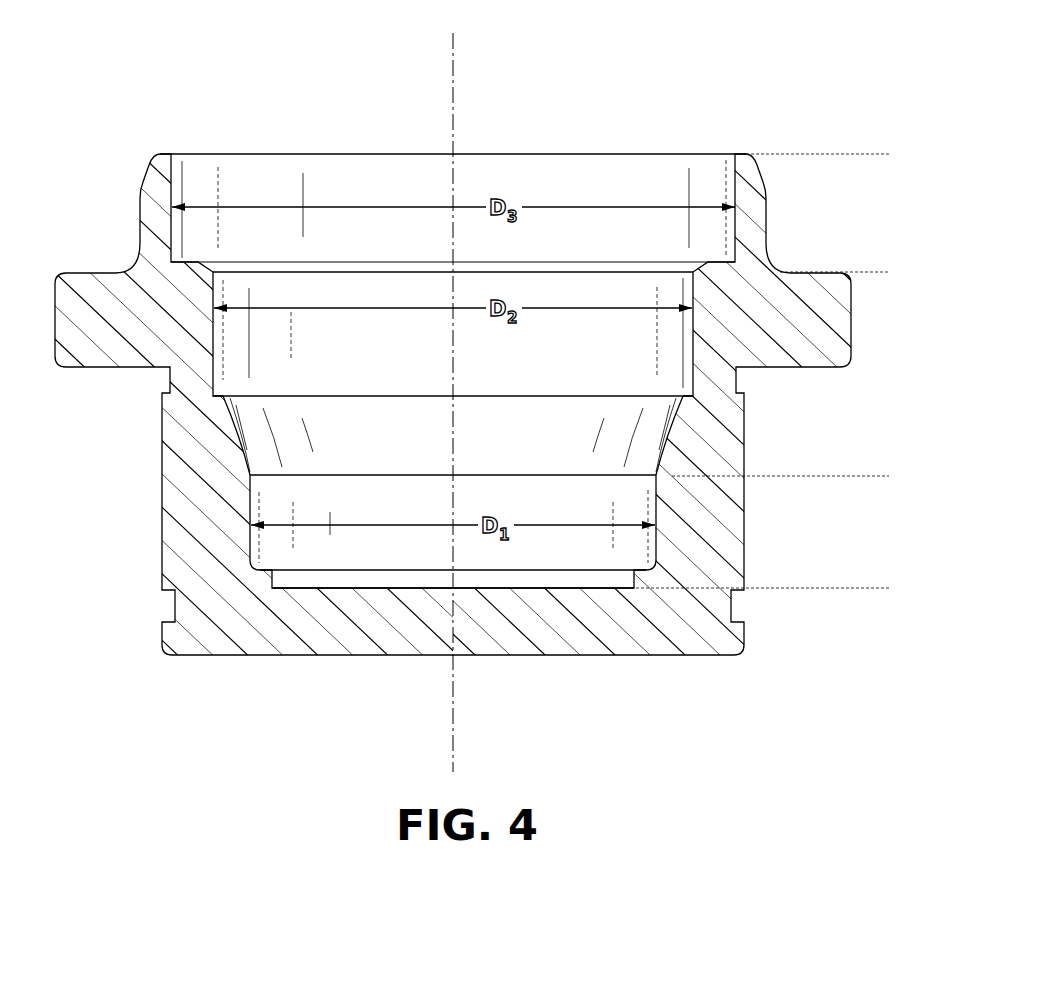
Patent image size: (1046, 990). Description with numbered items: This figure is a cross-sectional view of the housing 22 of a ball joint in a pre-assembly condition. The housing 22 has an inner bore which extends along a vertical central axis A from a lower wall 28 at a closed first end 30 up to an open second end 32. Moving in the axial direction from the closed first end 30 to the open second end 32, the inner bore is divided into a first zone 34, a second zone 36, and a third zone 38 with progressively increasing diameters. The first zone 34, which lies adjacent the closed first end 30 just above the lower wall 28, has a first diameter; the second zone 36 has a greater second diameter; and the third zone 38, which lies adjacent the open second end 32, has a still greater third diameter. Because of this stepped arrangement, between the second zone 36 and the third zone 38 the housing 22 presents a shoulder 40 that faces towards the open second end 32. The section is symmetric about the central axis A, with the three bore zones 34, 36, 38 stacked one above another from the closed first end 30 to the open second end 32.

The housing 22 is at (648, 84).
The lower wall 28 is at (574, 628).
The closed first end 30 is at (398, 587).
The open second end 32 is at (296, 154).
The first zone 34 is at (889, 476).
The second zone 36 is at (889, 272).
The third zone 38 is at (889, 154).
The shoulder 40 is at (200, 264).
The central axis A is at (456, 50).